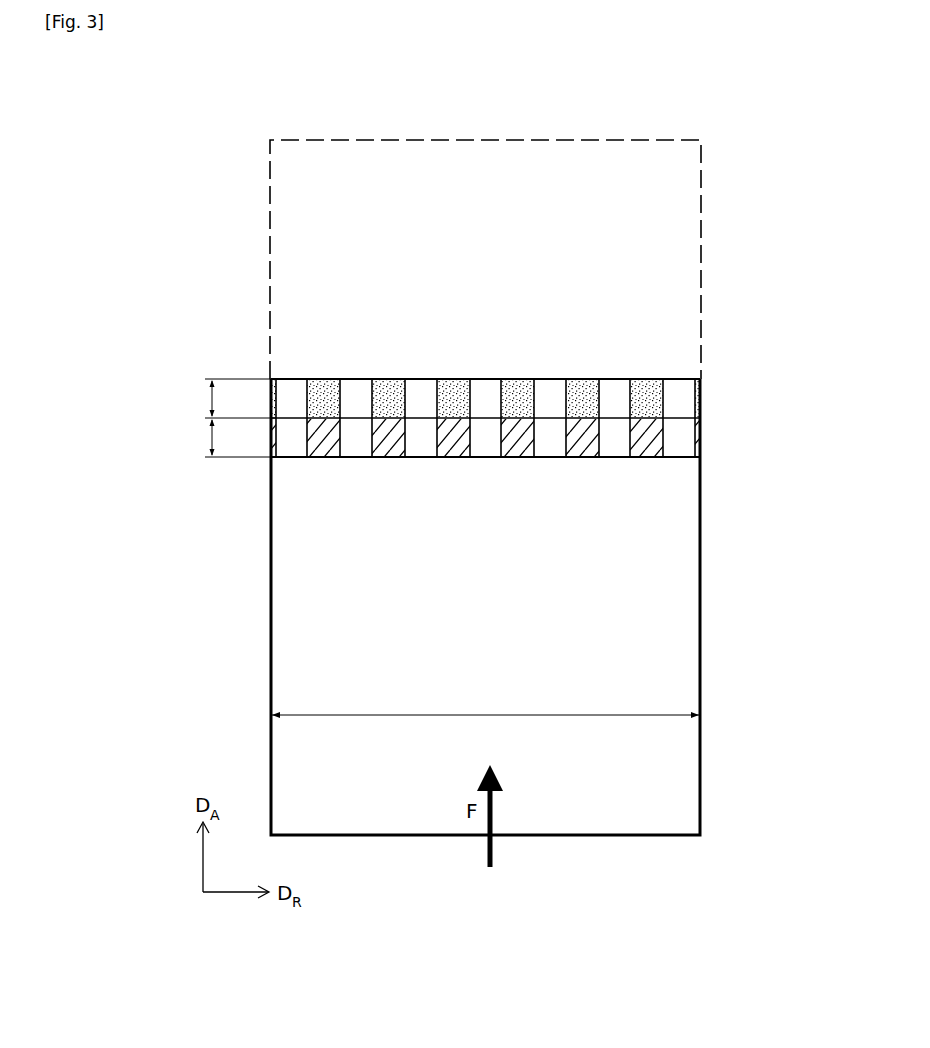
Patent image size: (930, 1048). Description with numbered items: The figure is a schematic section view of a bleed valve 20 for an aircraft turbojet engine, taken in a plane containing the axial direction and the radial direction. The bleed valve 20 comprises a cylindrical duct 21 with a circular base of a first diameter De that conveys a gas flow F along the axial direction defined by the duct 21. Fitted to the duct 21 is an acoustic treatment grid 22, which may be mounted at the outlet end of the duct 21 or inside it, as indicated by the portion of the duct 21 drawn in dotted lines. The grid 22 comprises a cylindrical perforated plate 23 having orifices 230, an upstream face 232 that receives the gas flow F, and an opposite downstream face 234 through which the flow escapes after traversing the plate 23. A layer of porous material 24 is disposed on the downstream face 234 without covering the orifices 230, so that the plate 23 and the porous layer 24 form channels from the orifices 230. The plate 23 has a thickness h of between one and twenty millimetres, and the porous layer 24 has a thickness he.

The bleed valve 20 is at (747, 128).
The cylindrical duct 21 is at (700, 715).
The grid 22 is at (703, 433).
The perforated plate 23 is at (325, 448).
The layer of porous material 24 is at (395, 390).
The orifices 230 is at (482, 416).
The upstream face 232 is at (635, 460).
The downstream face 234 is at (583, 413).